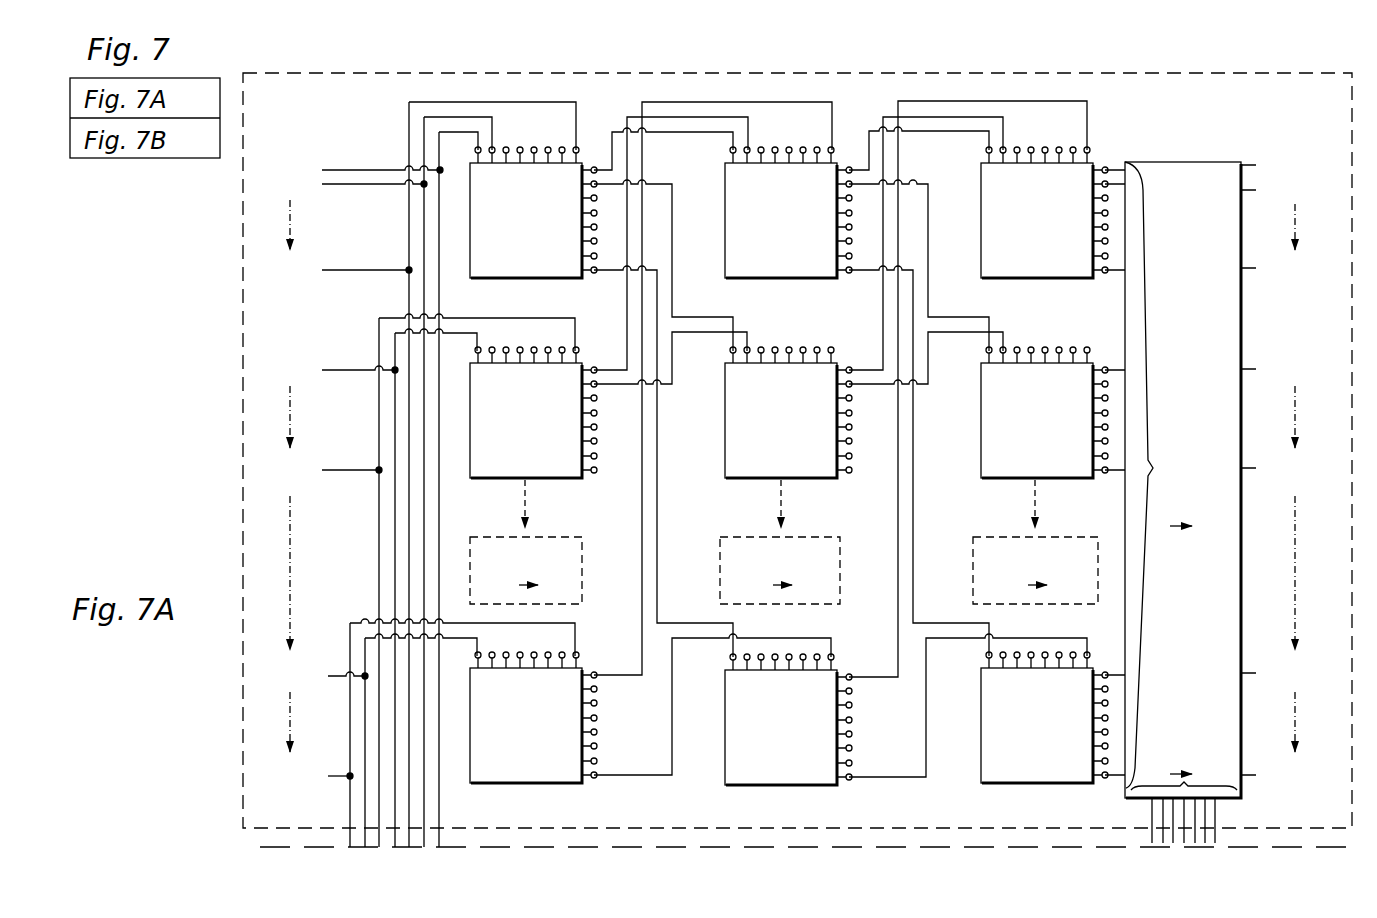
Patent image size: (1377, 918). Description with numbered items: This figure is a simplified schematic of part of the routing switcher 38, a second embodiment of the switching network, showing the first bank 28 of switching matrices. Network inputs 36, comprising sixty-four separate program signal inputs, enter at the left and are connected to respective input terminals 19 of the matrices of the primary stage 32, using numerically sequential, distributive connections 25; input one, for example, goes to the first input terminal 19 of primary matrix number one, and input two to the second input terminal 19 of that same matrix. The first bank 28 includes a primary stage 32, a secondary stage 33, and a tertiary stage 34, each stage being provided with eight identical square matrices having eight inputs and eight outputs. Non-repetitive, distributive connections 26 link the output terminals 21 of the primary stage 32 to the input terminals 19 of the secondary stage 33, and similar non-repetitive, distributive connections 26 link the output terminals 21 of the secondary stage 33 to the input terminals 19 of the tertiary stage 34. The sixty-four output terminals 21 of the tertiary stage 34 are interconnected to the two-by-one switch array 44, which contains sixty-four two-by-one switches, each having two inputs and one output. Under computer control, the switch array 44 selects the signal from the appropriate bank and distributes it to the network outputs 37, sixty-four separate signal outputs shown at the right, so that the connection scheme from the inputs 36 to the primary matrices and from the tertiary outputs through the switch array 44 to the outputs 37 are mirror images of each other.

The input terminals 19 is at (476, 150).
The output terminals 21 is at (1103, 274).
The sequential, distributive connections 25 is at (438, 85).
The non-repetitive, distributive connections 26 is at (668, 85).
The first bank 28 is at (310, 70).
The primary stage 32 is at (524, 85).
The secondary stage 33 is at (810, 127).
The tertiary stage 34 is at (1055, 85).
The network inputs 36 is at (325, 128).
The network outputs 37 is at (1294, 100).
The routing switcher 38 is at (924, 70).
The 2 by 1 switch array 44 is at (1180, 158).